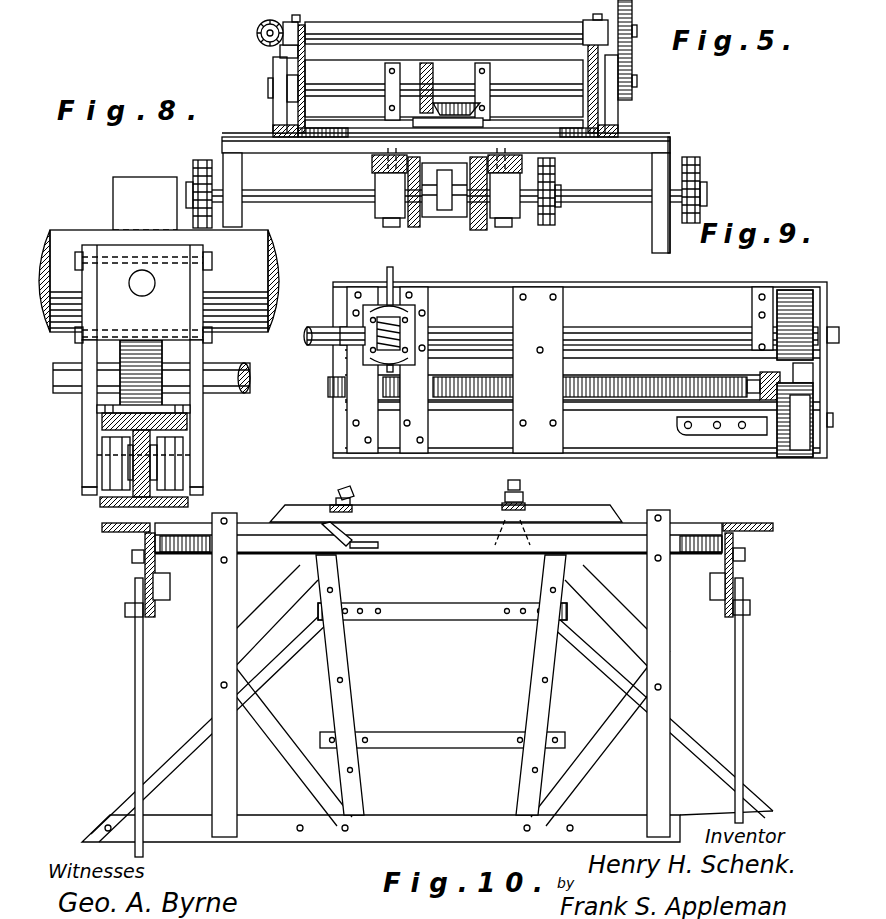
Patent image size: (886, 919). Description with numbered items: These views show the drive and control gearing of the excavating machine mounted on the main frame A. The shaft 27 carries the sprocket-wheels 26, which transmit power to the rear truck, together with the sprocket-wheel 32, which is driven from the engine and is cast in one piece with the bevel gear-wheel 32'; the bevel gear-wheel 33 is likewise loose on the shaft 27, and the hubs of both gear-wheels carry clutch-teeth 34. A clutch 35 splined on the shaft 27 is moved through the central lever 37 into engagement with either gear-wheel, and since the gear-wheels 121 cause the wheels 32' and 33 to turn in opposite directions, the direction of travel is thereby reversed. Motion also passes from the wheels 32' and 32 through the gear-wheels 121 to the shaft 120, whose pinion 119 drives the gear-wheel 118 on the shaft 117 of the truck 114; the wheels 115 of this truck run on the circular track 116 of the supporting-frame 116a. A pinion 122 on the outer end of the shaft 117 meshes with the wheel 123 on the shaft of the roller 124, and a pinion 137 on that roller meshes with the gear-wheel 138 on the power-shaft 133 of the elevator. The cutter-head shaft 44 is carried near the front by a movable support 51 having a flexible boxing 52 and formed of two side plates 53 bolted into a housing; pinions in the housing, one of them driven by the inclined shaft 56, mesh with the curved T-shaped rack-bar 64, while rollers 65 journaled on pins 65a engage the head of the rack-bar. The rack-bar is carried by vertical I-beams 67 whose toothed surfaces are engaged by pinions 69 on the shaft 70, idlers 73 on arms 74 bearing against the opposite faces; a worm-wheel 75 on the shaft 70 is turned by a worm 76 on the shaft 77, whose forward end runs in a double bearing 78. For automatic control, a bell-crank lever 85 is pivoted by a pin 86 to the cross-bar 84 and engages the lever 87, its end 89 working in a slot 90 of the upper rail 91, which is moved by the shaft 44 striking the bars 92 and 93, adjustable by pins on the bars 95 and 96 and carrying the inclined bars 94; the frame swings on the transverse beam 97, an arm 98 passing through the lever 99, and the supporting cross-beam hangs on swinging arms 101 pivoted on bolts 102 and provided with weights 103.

In FIG. 5, the shaft 27 is at (309, 198).
In FIG. 5, the sprocket-wheels 26 is at (702, 173).
In FIG. 5, the circular track 116 is at (620, 134).
In FIG. 5, the supporting-frame 116a is at (675, 148).
In FIG. 5, the gear-wheels 121 is at (408, 177).
In FIG. 5, the shaft 120 is at (450, 146).
In FIG. 5, the bevel gear-wheel 33 is at (413, 218).
In FIG. 5, the clutch-teeth 34 is at (428, 215).
In FIG. 5, the clutch 35 is at (444, 202).
In FIG. 5, the central lever 37 is at (470, 222).
In FIG. 5, the sprocket-wheel 32 is at (522, 211).
In FIG. 5, the bevel gear-wheel 32' is at (533, 213).
In FIG. 5, the frame A is at (618, 249).
In FIG. 9, the frame A is at (693, 443).
In FIG. 10, the frame A is at (123, 535).
In FIG. 5, the roller 124 is at (444, 22).
In FIG. 5, the truck 114 is at (444, 88).
In FIG. 5, the shaft 117 is at (444, 103).
In FIG. 5, the gear-wheel 118 is at (437, 72).
In FIG. 5, the pinion 119 is at (457, 110).
In FIG. 5, the wheels 115 is at (284, 84).
In FIG. 5, the gear-wheel 138 is at (281, 58).
In FIG. 5, the pinion 137 is at (300, 19).
In FIG. 5, the power-shaft 133 is at (257, 37).
In FIG. 5, the wheel 123 is at (624, 44).
In FIG. 5, the pinion 122 is at (619, 72).
In FIG. 8, the cutter-head shaft 44 is at (159, 281).
In FIG. 8, the shaft 56 is at (233, 387).
In FIG. 8, the side plates 53 is at (208, 353).
In FIG. 8, the movable support 51 is at (143, 370).
In FIG. 8, the flexible boxing 52 is at (166, 423).
In FIG. 8, the curved rack-bar 64 is at (102, 432).
In FIG. 9, the curved rack-bar 64 is at (655, 400).
In FIG. 8, the rollers 65 is at (112, 462).
In FIG. 8, the pins 65a is at (102, 458).
In FIG. 9, the shaft 70 is at (596, 332).
In FIG. 9, the pinions 69 is at (787, 305).
In FIG. 9, the I-beams 67 is at (790, 385).
In FIG. 9, the idlers 73 is at (797, 432).
In FIG. 9, the arms 74 is at (757, 433).
In FIG. 9, the worm 76 is at (383, 317).
In FIG. 9, the double bearing 78 is at (370, 337).
In FIG. 9, the shaft 77 is at (394, 273).
In FIG. 9, the worm-wheel 75 is at (415, 328).
In FIG. 10, the transverse beam 97 is at (204, 540).
In FIG. 10, the upper rail 91 is at (455, 540).
In FIG. 10, the frame cross-bar 84 is at (449, 501).
In FIG. 10, the bar 92 is at (448, 615).
In FIG. 10, the bar 93 is at (428, 737).
In FIG. 10, the bars 94 is at (347, 693).
In FIG. 10, the bar 95 is at (300, 667).
In FIG. 10, the bar 96 is at (582, 663).
In FIG. 10, the swinging arms 101 is at (158, 526).
In FIG. 10, the bolts 102 is at (135, 562).
In FIG. 10, the weights 103 is at (170, 600).
In FIG. 10, the end of bell-crank 89 is at (347, 545).
In FIG. 10, the slot 90 is at (378, 545).
In FIG. 10, the lever 87 is at (335, 493).
In FIG. 10, the bell-crank lever 85 is at (332, 496).
In FIG. 10, the pin 86 is at (353, 498).
In FIG. 10, the arm 98 is at (523, 478).
In FIG. 10, the lever 99 is at (535, 498).